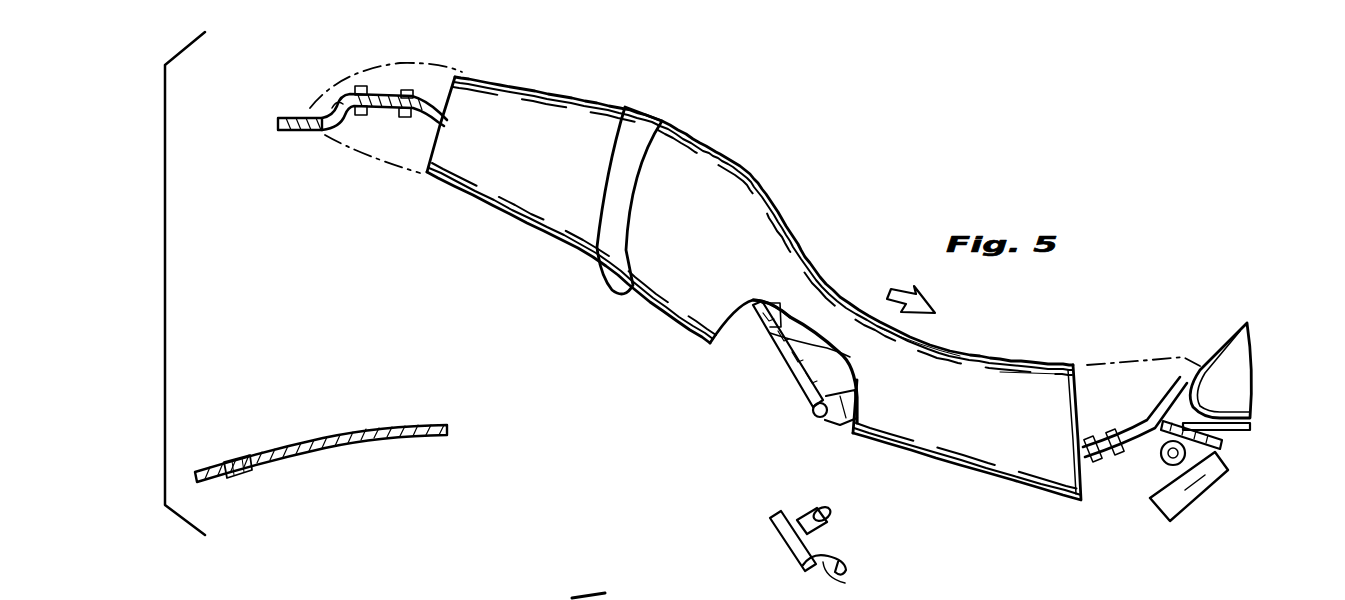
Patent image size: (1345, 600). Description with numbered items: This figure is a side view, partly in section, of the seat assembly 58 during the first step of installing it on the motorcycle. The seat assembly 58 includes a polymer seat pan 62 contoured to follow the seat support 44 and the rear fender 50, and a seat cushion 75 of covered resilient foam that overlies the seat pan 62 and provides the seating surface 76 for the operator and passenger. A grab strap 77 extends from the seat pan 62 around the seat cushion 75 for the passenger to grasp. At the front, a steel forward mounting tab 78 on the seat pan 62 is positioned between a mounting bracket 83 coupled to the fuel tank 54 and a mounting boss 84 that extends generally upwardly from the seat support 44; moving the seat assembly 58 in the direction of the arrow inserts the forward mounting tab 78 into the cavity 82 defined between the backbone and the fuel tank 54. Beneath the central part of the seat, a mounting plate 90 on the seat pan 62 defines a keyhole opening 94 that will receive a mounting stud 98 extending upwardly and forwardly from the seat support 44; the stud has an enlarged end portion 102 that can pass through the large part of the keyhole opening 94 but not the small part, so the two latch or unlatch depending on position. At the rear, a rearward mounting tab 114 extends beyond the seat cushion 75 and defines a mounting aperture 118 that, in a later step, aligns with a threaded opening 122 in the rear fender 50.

The seat support 44 is at (847, 577).
The rear fender 50 is at (353, 440).
The fuel tank 54 is at (1242, 335).
The seat assembly 58 is at (799, 196).
The seat pan 62 is at (821, 424).
The seat cushion 75 is at (1050, 372).
The seating surface 76 is at (947, 343).
The grab strap 77 is at (648, 124).
The forward mounting tab 78 is at (1153, 447).
The cavity 82 is at (1227, 440).
The mounting bracket 83 is at (1252, 428).
The mounting boss 84 is at (1162, 470).
The mounting plate 90 is at (848, 359).
The keyhole opening 94 is at (787, 362).
The mounting stud 98 is at (800, 521).
The enlarged end portion 102 is at (826, 516).
The rearward mounting tab 114 is at (312, 130).
The mounting aperture 118 is at (297, 117).
The threaded opening 122 is at (231, 462).